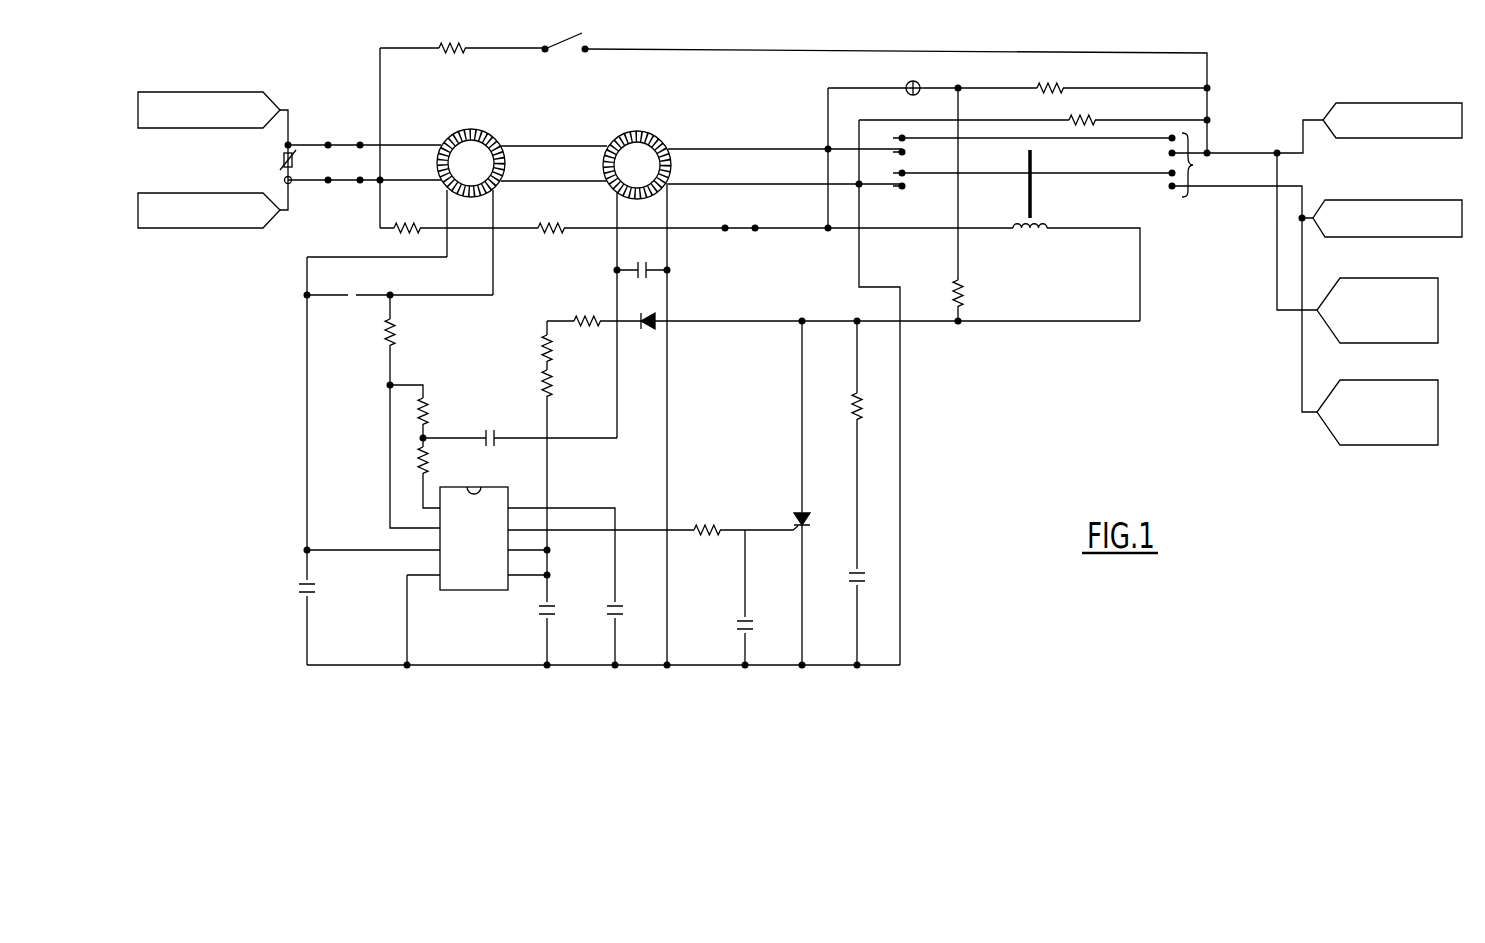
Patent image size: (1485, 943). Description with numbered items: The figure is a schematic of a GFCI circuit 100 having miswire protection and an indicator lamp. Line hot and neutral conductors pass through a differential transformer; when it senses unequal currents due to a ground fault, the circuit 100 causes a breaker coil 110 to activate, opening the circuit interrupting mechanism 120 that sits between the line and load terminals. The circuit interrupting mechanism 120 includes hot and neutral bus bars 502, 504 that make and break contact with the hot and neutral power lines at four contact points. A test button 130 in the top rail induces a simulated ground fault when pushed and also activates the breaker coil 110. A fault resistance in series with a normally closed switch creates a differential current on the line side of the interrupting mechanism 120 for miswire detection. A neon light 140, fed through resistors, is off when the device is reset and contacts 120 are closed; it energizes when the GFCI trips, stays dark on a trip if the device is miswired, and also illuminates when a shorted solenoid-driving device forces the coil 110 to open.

The GFCI circuit 100 is at (800, 334).
The breaker coil 110 is at (1050, 226).
The circuit interrupting mechanism 120 is at (1076, 170).
The test button 130 is at (563, 33).
The neon light 140 is at (918, 80).
The hot bus bar 502 is at (1128, 138).
The neutral bus bar 504 is at (1143, 173).